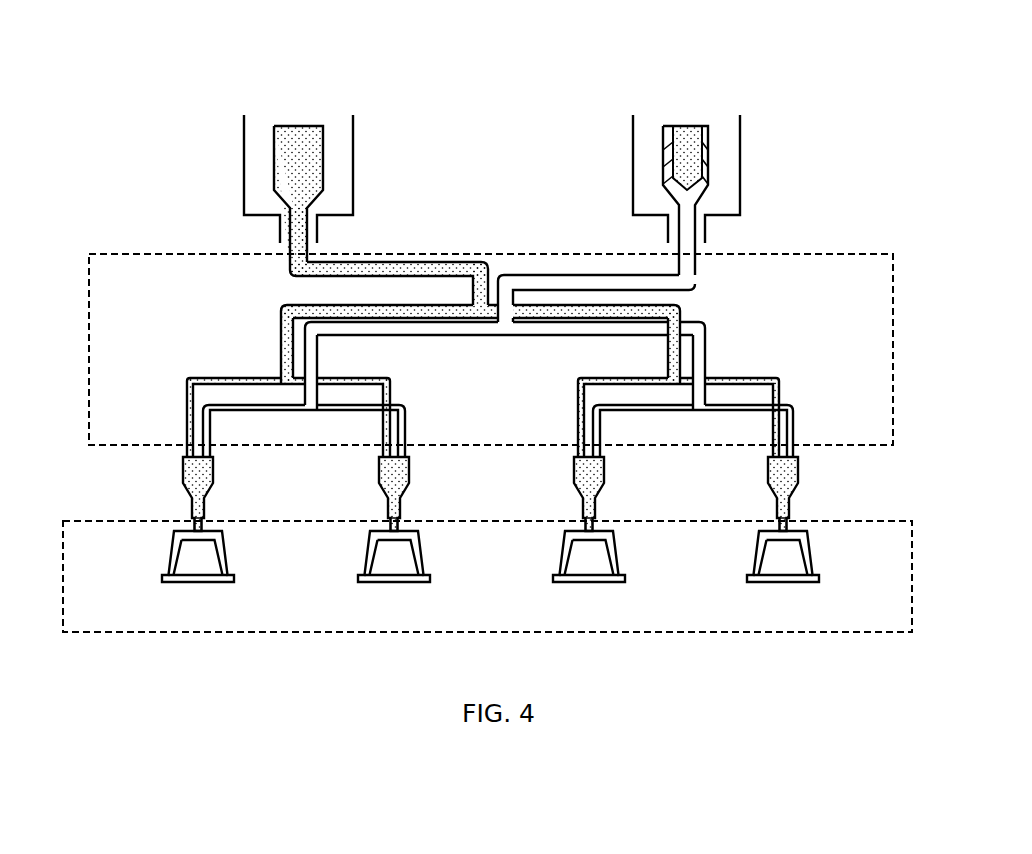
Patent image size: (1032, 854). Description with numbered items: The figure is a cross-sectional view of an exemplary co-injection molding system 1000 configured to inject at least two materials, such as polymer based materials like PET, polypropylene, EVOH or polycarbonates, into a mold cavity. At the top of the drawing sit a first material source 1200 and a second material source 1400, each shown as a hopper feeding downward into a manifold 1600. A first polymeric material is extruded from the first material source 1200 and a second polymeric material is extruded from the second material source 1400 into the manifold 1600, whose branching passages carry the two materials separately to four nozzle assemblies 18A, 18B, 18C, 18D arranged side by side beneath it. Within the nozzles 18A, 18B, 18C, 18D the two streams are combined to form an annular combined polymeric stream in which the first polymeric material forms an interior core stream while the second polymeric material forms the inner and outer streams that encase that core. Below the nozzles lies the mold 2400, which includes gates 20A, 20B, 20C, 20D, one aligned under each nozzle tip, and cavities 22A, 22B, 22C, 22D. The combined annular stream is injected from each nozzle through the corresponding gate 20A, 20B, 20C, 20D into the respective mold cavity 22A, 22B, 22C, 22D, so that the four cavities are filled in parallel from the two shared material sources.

The co-injection molding system 1000 is at (185, 78).
The first material source 1200 is at (353, 169).
The second material source 1400 is at (740, 169).
The manifold 1600 is at (893, 355).
The mold 2400 is at (912, 570).
The nozzle assembly 18A is at (213, 470).
The nozzle assembly 18B is at (409, 470).
The nozzle assembly 18C is at (604, 470).
The nozzle assembly 18D is at (798, 470).
The gate 20A is at (195, 527).
The gate 20B is at (391, 527).
The gate 20C is at (586, 527).
The gate 20D is at (780, 527).
The cavity 22A is at (162, 578).
The cavity 22B is at (358, 578).
The cavity 22C is at (553, 578).
The cavity 22D is at (747, 578).